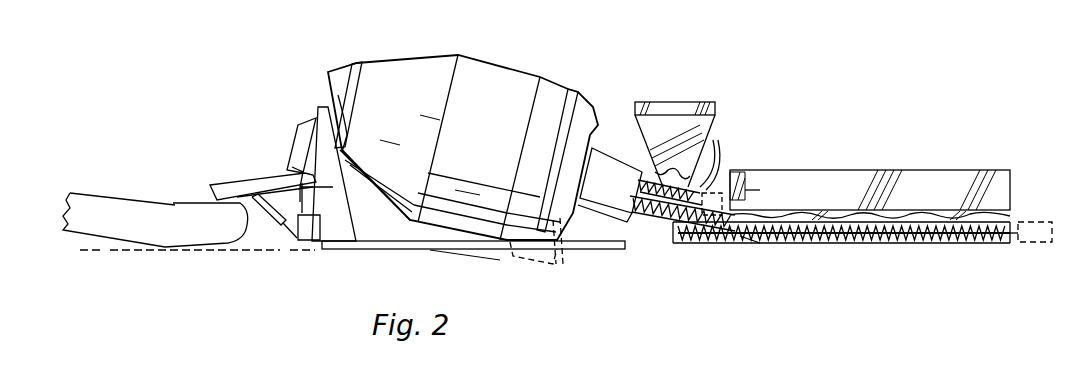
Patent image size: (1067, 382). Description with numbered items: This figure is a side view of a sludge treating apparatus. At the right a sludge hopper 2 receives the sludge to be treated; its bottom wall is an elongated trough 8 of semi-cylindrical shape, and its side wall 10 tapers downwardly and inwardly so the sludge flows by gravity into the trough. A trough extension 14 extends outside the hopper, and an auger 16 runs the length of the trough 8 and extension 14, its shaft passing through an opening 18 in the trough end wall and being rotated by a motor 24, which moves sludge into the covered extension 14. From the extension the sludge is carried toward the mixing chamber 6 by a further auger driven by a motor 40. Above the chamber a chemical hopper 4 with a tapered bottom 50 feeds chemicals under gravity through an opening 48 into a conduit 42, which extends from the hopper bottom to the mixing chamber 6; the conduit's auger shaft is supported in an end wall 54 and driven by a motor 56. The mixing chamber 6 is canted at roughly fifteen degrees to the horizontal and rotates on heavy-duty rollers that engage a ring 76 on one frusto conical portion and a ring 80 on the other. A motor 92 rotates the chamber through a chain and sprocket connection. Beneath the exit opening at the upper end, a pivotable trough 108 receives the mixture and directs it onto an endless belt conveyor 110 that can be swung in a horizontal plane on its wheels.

The sludge hopper 2 is at (863, 167).
The chemical hopper 4 is at (668, 98).
The mixing chamber 6 is at (502, 55).
The elongated trough 8 is at (905, 242).
The side wall 10 is at (1007, 217).
The trough extension 14 is at (697, 243).
The auger 16 is at (838, 237).
The opening 18 is at (1013, 240).
The motor 24 is at (1047, 243).
The motor 40 is at (752, 243).
The conduit 42 is at (706, 187).
The opening 48 is at (655, 157).
The tapered bottom 50 is at (697, 187).
The end wall 54 is at (718, 190).
The motor 56 is at (743, 188).
The ring 76 is at (573, 88).
The ring 80 is at (360, 63).
The motor 92 is at (560, 263).
The trough 108 is at (263, 180).
The endless belt conveyor 110 is at (122, 197).